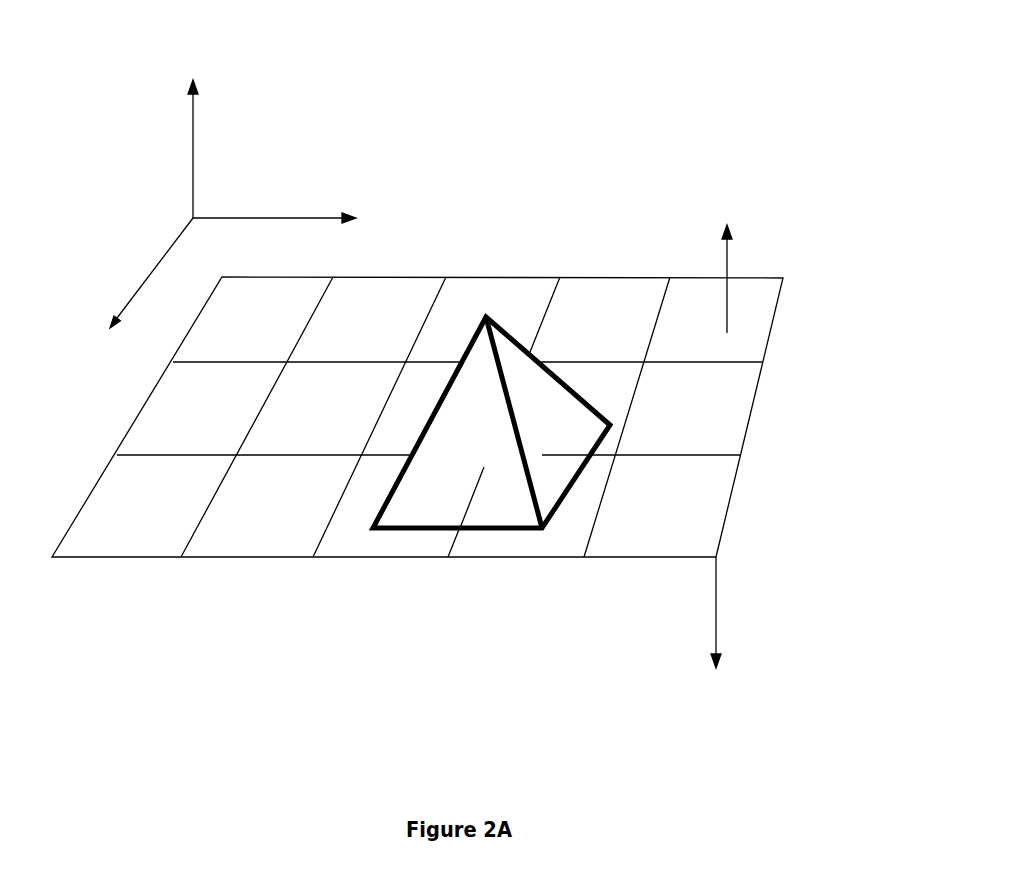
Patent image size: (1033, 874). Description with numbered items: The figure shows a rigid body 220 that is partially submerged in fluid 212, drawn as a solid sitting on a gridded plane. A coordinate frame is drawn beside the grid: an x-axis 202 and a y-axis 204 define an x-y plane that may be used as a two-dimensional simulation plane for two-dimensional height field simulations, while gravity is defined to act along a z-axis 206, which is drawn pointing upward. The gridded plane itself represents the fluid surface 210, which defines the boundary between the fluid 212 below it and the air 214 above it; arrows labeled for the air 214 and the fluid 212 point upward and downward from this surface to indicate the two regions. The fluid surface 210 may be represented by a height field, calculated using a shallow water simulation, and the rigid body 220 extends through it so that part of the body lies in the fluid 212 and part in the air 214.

The x-axis 202 is at (116, 301).
The y-axis 204 is at (311, 217).
The z-axis 206 is at (193, 121).
The fluid surface 210 is at (158, 557).
The fluid 212 is at (716, 643).
The air 214 is at (728, 250).
The rigid body 220 is at (507, 332).